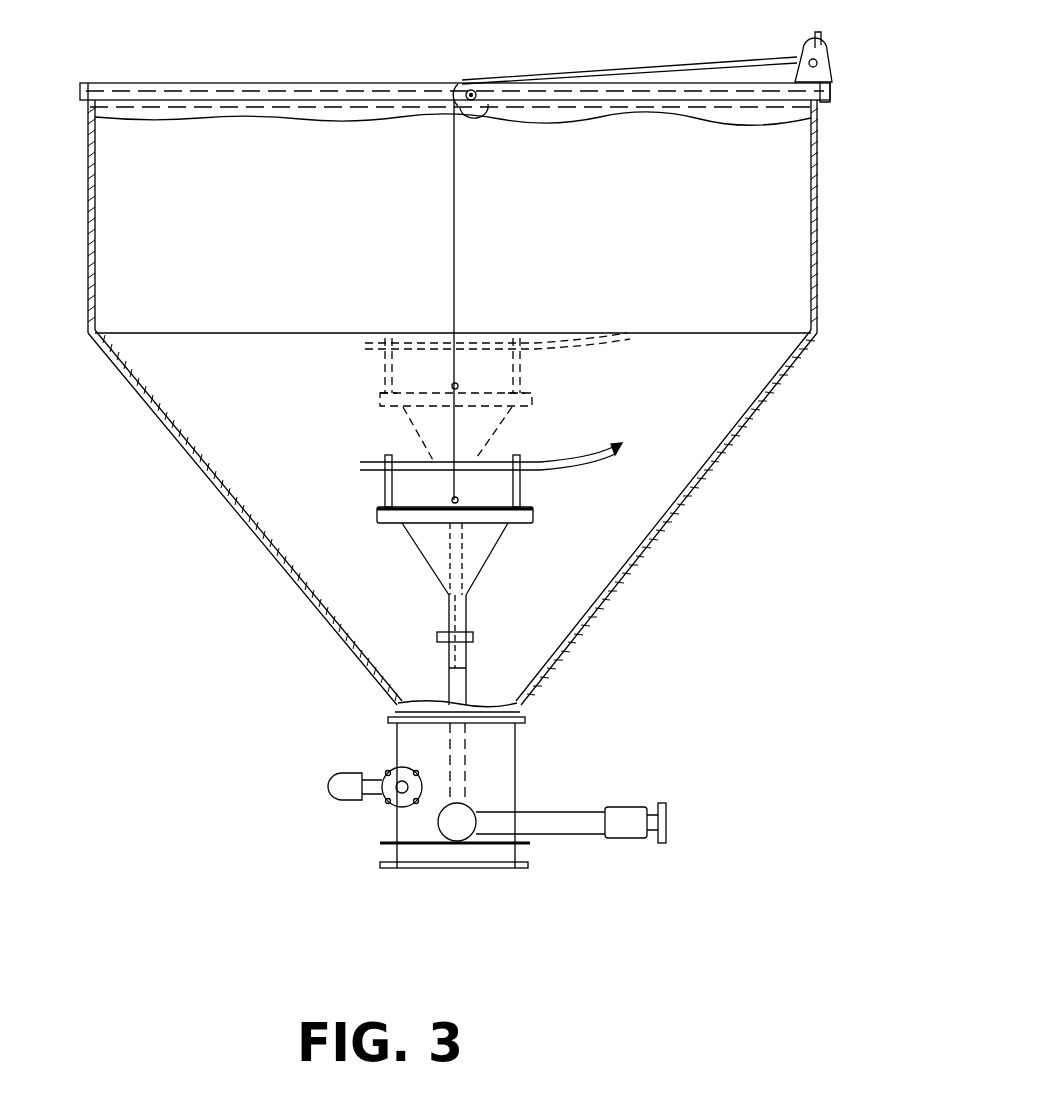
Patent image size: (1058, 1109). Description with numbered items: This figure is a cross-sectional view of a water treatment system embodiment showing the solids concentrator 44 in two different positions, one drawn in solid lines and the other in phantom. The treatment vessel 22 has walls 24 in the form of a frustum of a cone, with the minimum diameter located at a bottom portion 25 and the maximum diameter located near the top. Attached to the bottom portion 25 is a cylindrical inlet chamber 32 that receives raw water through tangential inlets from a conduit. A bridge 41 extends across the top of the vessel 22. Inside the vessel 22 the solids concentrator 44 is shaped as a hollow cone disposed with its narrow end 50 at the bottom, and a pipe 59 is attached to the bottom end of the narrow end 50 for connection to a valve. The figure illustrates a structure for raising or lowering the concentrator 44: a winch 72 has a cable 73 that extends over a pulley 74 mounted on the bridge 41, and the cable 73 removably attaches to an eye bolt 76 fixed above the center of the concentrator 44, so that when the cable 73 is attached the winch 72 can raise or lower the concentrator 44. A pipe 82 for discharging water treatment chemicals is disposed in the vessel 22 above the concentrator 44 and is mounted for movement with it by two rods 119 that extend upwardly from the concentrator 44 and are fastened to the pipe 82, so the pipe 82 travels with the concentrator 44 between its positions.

The treatment vessel 22 is at (698, 508).
The walls 24 is at (648, 543).
The bottom portion 25 is at (380, 690).
The cylindrical inlet chamber 32 is at (395, 745).
The bridge 41 is at (360, 83).
The solids concentrator 44 is at (492, 428).
The narrow end 50 is at (435, 577).
The pipe 59 is at (467, 622).
The winch 72 is at (832, 69).
The cable 73 is at (612, 68).
The pulley 74 is at (478, 106).
The eye bolt 76 is at (455, 383).
The pipe 82 is at (382, 343).
The rods 119 is at (385, 493).